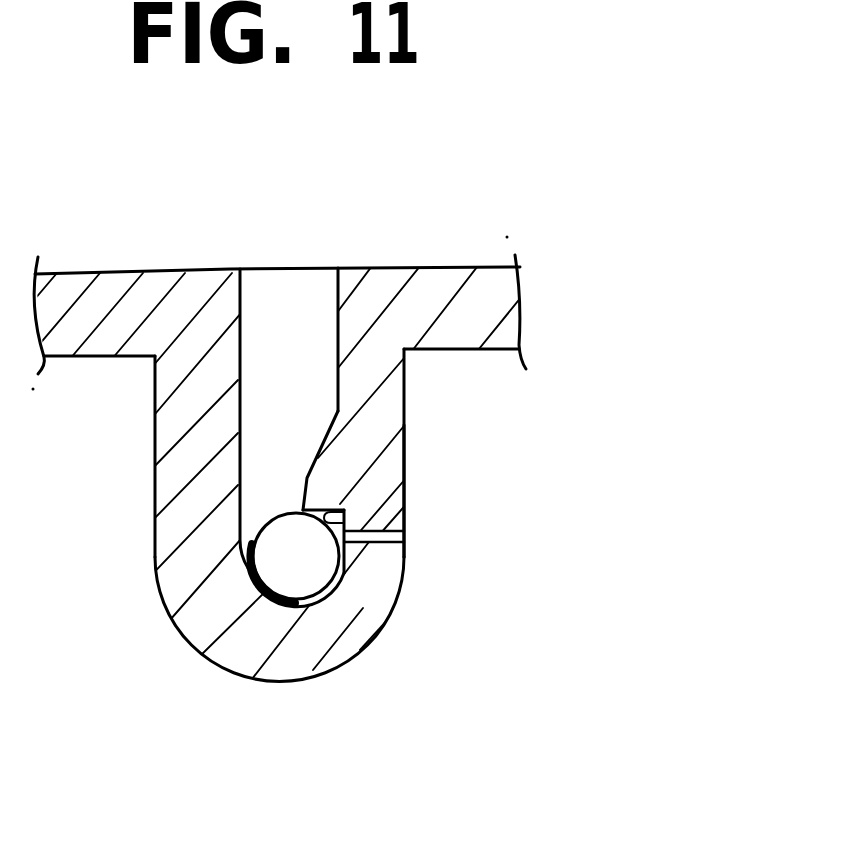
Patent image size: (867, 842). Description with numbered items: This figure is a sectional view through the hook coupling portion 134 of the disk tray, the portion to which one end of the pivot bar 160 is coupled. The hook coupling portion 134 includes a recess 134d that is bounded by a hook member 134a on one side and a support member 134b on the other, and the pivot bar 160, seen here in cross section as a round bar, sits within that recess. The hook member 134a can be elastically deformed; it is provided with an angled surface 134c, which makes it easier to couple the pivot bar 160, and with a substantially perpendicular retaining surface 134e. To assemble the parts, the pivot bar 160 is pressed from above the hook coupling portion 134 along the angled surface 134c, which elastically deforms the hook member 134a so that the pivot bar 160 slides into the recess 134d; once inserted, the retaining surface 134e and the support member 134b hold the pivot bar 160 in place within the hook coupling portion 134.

The hook coupling portion 134 is at (667, 450).
The hook member 134a is at (377, 413).
The support member 134b is at (368, 575).
The angled surface 134c is at (310, 472).
The recess 134d is at (290, 300).
The retaining surface 134e is at (344, 512).
The pivot bar 160 is at (270, 573).